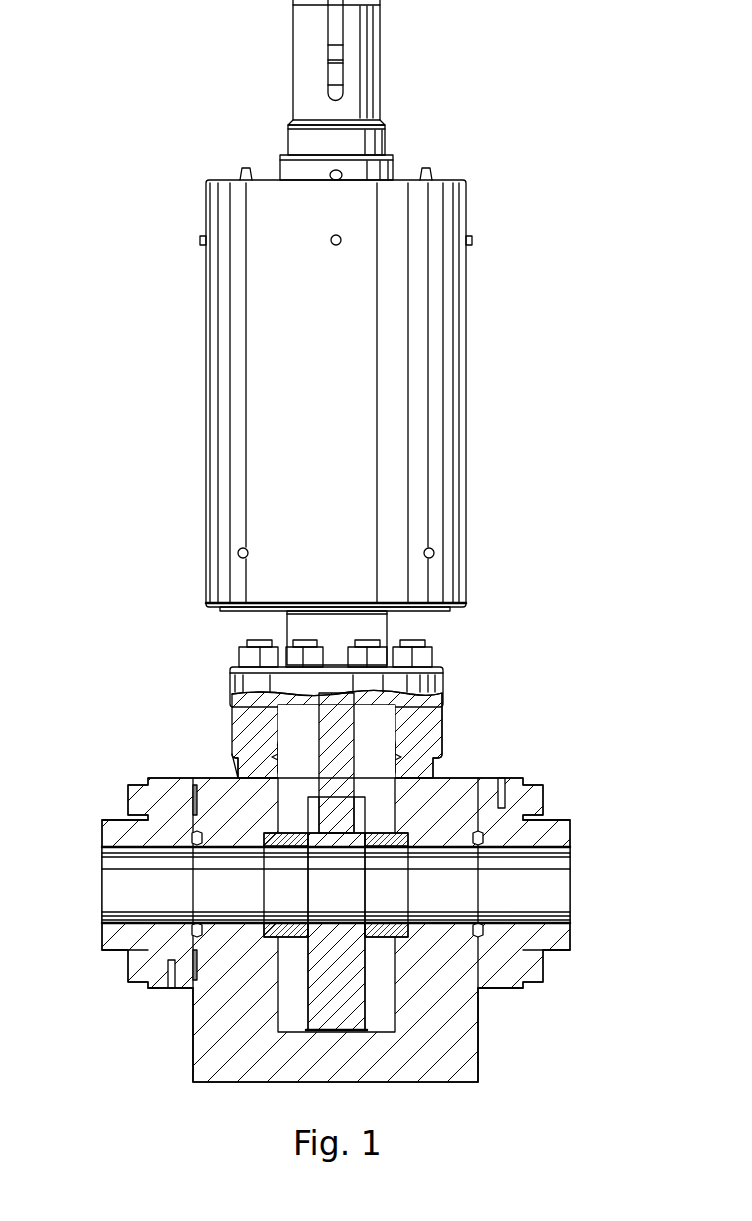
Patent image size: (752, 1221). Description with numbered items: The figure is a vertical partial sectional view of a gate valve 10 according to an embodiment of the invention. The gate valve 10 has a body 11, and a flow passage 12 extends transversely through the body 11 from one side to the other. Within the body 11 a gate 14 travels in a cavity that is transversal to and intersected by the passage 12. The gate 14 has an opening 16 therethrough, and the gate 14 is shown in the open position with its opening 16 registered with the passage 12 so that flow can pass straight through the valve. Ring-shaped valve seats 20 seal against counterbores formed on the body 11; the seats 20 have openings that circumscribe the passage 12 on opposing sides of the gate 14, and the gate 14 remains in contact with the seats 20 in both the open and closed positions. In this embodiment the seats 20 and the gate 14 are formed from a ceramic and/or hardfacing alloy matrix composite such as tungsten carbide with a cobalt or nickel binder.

The gate valve 10 is at (172, 296).
The body 11 is at (203, 1035).
The flow passage 12 is at (108, 830).
The gate 14 is at (360, 992).
The opening 16 is at (347, 917).
The valve seats 20 is at (293, 938).